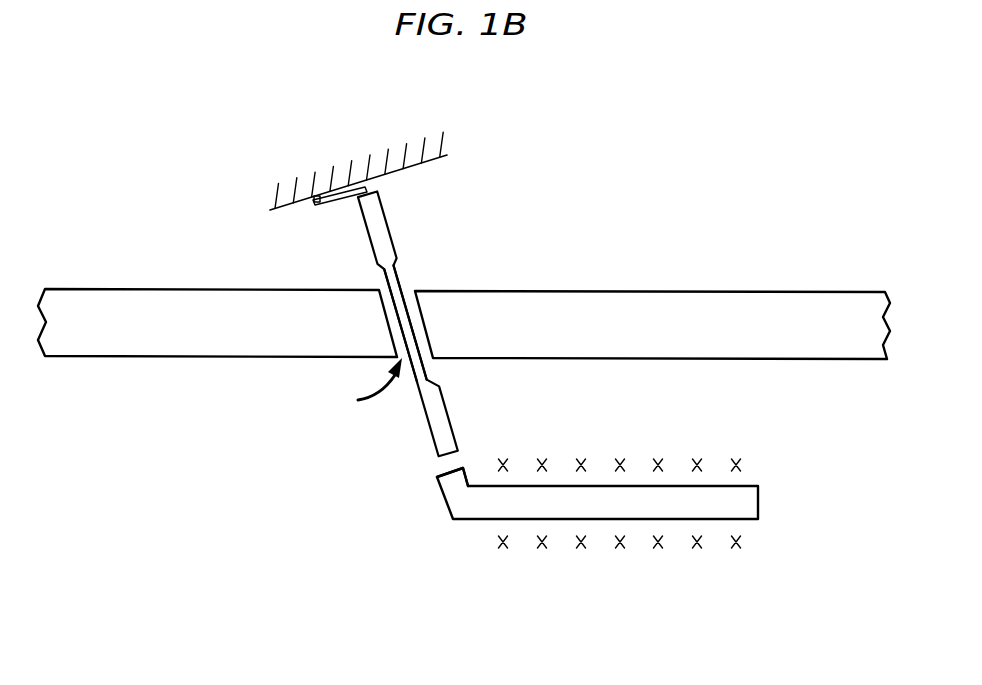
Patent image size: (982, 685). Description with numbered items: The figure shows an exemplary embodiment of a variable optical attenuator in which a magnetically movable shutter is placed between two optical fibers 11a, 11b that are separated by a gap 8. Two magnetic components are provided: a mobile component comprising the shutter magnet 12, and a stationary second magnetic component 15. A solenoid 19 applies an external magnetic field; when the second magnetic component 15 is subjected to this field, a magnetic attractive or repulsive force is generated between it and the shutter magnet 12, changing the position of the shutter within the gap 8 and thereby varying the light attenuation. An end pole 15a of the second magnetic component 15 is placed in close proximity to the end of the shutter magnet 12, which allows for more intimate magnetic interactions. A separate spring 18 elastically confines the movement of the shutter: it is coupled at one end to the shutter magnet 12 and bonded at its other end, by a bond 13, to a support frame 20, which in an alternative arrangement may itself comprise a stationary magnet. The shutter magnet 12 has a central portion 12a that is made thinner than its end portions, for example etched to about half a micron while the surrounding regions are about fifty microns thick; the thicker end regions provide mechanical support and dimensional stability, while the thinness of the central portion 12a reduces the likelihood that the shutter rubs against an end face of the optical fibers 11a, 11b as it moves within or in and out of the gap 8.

The gap 8 is at (370, 385).
The optical fiber 11a is at (740, 323).
The optical fiber 11b is at (152, 315).
The shutter magnet 12 is at (422, 417).
The central portion 12a is at (405, 283).
The bond 13 is at (317, 205).
The second magnetic component 15 is at (637, 522).
The end pole 15a is at (457, 467).
The spring 18 is at (342, 203).
The solenoid 19 is at (542, 553).
The support frame 20 is at (360, 147).